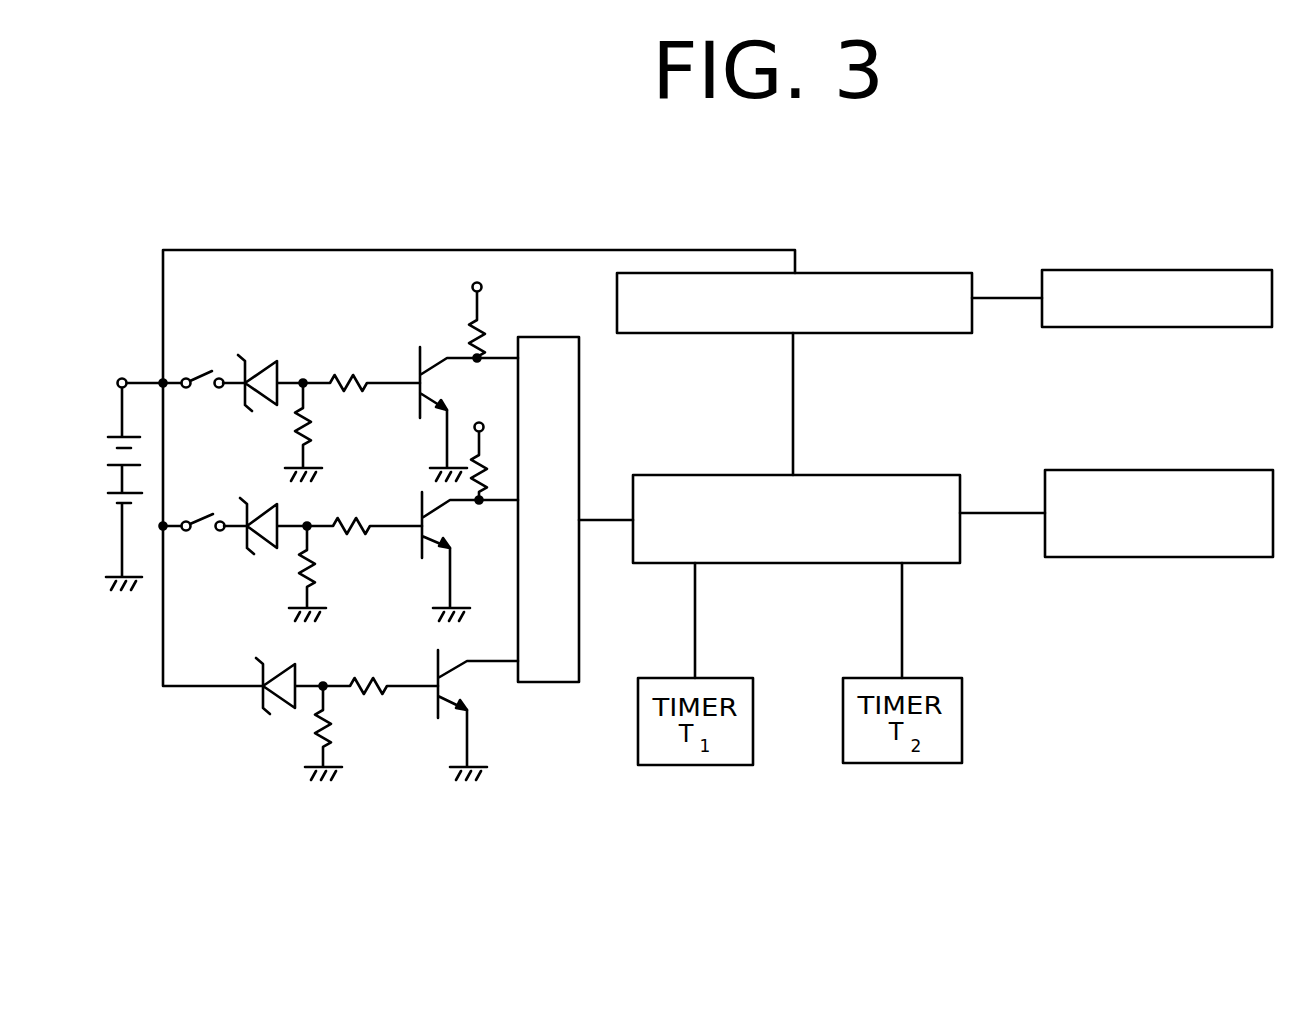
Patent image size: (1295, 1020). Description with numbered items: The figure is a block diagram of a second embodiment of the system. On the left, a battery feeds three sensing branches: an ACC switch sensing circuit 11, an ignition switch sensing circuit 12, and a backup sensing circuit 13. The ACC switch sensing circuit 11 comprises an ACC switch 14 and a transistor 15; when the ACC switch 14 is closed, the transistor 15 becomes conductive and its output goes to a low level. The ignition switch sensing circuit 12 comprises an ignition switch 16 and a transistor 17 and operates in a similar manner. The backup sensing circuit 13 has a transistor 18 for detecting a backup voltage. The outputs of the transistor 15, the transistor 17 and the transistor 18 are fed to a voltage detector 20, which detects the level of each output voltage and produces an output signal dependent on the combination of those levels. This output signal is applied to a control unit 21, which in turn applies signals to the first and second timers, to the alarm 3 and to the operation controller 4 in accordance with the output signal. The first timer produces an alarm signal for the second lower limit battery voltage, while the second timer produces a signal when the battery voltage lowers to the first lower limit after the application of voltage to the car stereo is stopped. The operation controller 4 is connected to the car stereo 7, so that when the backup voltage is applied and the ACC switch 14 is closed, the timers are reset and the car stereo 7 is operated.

The alarm 3 is at (1177, 470).
The operation controller 4 is at (951, 333).
The car stereo 7 is at (1196, 328).
The ACC switch sensing circuit 11 is at (306, 358).
The ignition switch sensing circuit 12 is at (270, 568).
The backup sensing circuit 13 is at (278, 732).
The ACC switch 14 is at (207, 373).
The transistor 15 is at (443, 382).
The ignition switch 16 is at (210, 518).
The transistor 17 is at (448, 522).
The transistor 18 is at (462, 683).
The voltage detector 20 is at (579, 385).
The control unit 21 is at (960, 534).